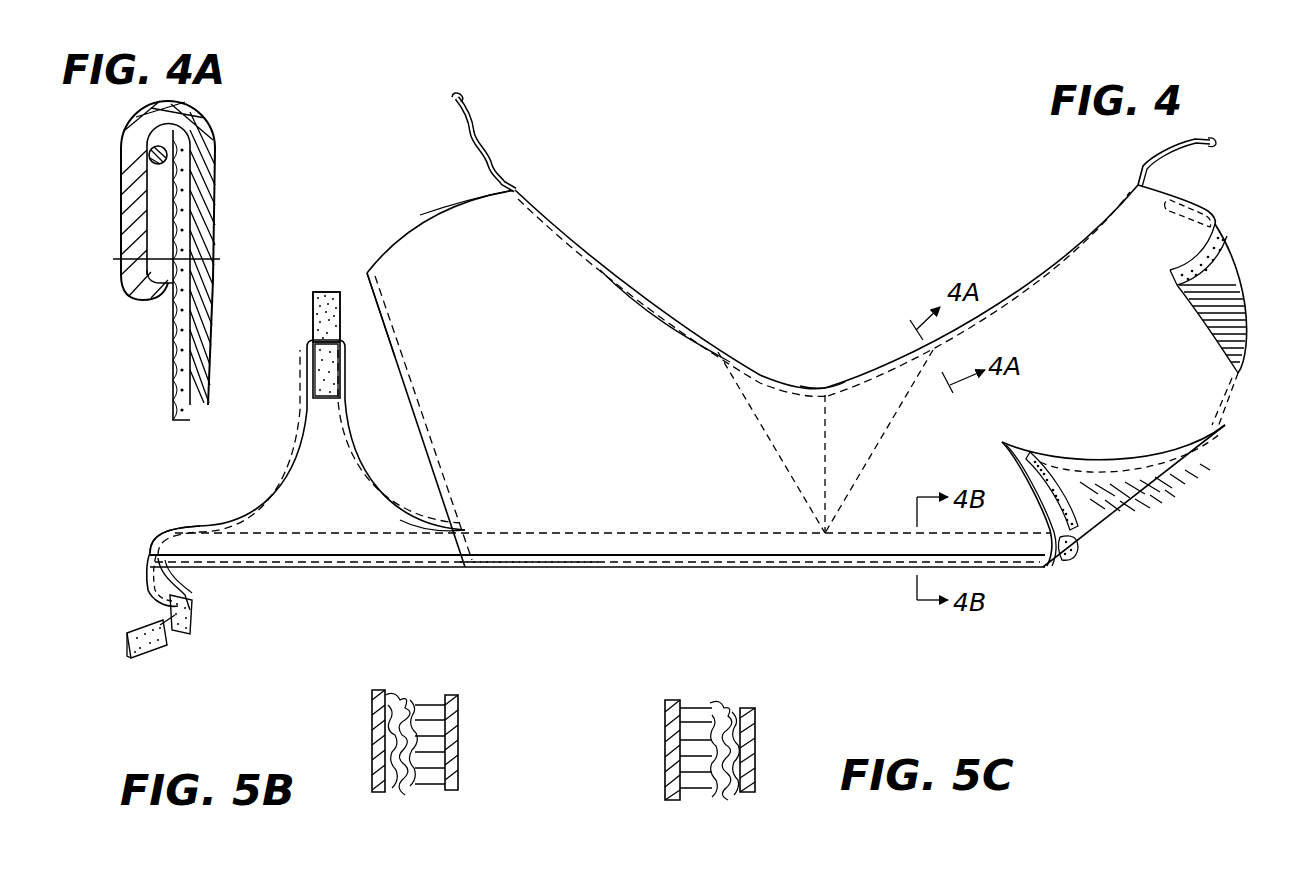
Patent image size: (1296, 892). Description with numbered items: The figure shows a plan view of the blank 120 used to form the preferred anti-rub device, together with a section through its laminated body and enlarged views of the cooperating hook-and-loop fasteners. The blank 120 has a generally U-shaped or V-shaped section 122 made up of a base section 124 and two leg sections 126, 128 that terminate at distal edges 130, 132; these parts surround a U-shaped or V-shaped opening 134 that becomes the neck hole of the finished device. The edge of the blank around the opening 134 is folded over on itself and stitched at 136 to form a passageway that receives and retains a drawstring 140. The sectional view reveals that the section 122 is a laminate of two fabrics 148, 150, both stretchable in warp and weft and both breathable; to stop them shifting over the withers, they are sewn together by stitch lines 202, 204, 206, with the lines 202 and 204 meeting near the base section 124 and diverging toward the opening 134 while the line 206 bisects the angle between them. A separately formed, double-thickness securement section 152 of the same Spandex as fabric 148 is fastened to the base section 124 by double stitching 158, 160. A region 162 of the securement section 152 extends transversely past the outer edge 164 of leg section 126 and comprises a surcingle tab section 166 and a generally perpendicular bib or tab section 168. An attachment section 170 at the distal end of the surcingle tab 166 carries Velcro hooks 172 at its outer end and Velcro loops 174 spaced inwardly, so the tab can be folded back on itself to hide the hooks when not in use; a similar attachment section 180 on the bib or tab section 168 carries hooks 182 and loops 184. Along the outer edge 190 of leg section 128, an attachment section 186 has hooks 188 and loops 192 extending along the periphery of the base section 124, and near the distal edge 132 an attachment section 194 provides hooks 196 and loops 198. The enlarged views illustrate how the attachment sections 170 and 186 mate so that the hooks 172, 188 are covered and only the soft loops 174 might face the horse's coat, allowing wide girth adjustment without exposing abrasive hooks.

In FIG. 4, the blank 120 is at (815, 335).
In FIG. 4, the generally U-shaped or V-shaped section 122 is at (432, 216).
In FIG. 4, the base section 124 is at (773, 523).
In FIG. 4, the leg section 126 is at (485, 188).
In FIG. 4, the leg section 128 is at (1137, 208).
In FIG. 4, the distal edge 130 is at (394, 244).
In FIG. 4, the distal edge 132 is at (1178, 197).
In FIG. 4, the generally U-shaped or V-shaped opening 134 is at (833, 380).
In FIG. 4A, the stitching 136 is at (118, 262).
In FIG. 4, the stitching 136 is at (652, 308).
In FIG. 4A, the drawstring 140 is at (149, 155).
In FIG. 4, the drawstring 140 is at (498, 151).
In FIG. 4A, the fabric 148 is at (197, 280).
In FIG. 4A, the fabric 150 is at (172, 345).
In FIG. 4, the securement section 152 is at (686, 569).
In FIG. 4, the double stitching 158 is at (615, 505).
In FIG. 4, the double stitching 160 is at (566, 562).
In FIG. 4, the region 162 is at (254, 502).
In FIG. 4, the outer edge 164 is at (420, 442).
In FIG. 4, the surcingle tab section 166 is at (202, 488).
In FIG. 4, the bib or tab section 168 is at (380, 383).
In FIG. 4, the attachment section 170 is at (178, 640).
In FIG. 4, the Velcro hooks 172 is at (158, 647).
In FIG. 5B, the Velcro hooks 172 is at (433, 700).
In FIG. 4, the Velcro loops 174 is at (192, 607).
In FIG. 5C, the Velcro loops 174 is at (755, 772).
In FIG. 4, the attachment section 180 is at (308, 338).
In FIG. 4, the Velcro hooks 182 is at (335, 290).
In FIG. 4, the Velcro loops 184 is at (320, 393).
In FIG. 4, the attachment section 186 is at (1147, 520).
In FIG. 4, the Velcro hooks 188 is at (1050, 465).
In FIG. 5C, the Velcro hooks 188 is at (698, 705).
In FIG. 4, the outer edge 190 is at (1225, 425).
In FIG. 4, the Velcro loops 192 is at (1057, 560).
In FIG. 5B, the Velcro loops 192 is at (400, 690).
In FIG. 4, the attachment section 194 is at (1202, 249).
In FIG. 4, the Velcro hooks 196 is at (1183, 280).
In FIG. 4, the Velcro loops 198 is at (1247, 205).
In FIG. 4, the stitch line 202 is at (772, 440).
In FIG. 4, the stitch line 204 is at (873, 457).
In FIG. 4, the stitch line 206 is at (857, 427).